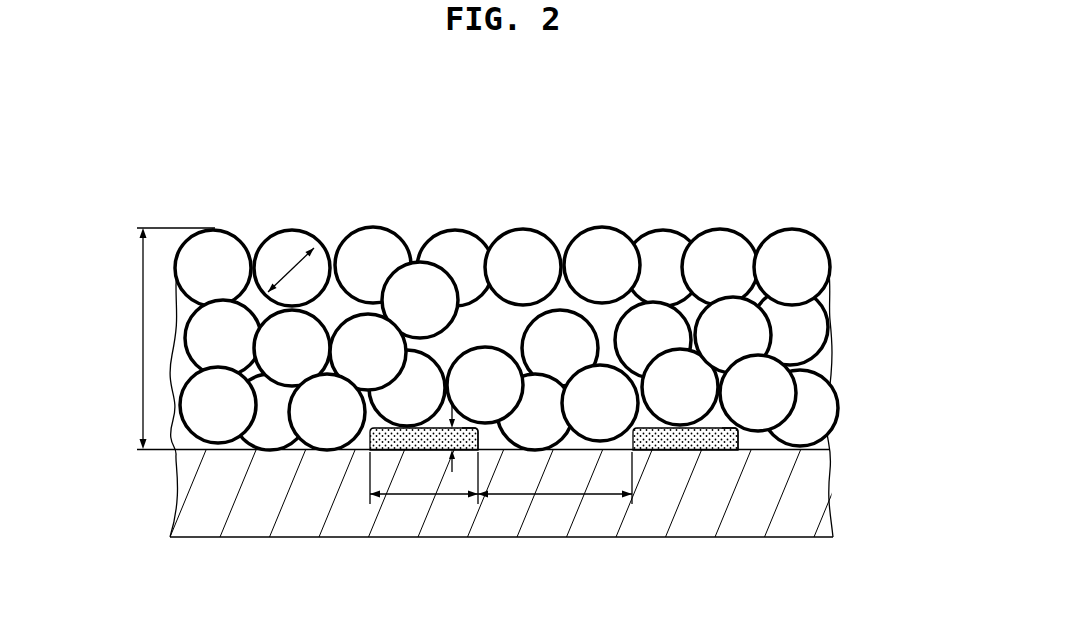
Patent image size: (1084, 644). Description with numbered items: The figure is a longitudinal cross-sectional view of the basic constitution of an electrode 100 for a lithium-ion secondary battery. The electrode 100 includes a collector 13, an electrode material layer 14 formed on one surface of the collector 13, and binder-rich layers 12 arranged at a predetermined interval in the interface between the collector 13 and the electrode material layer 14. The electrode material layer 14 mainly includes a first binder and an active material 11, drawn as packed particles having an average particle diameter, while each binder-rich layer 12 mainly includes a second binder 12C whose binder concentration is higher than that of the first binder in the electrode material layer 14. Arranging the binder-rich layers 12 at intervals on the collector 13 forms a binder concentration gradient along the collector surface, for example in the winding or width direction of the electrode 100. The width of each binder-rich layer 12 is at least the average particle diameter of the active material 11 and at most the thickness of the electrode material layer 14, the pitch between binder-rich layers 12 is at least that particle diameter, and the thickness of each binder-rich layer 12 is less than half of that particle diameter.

The electrode 100 is at (687, 203).
The active material 11 is at (793, 250).
The binder-rich layer 12 is at (393, 460).
The second binder 12C is at (465, 441).
The collector 13 is at (532, 539).
The electrode material layer 14 is at (850, 230).